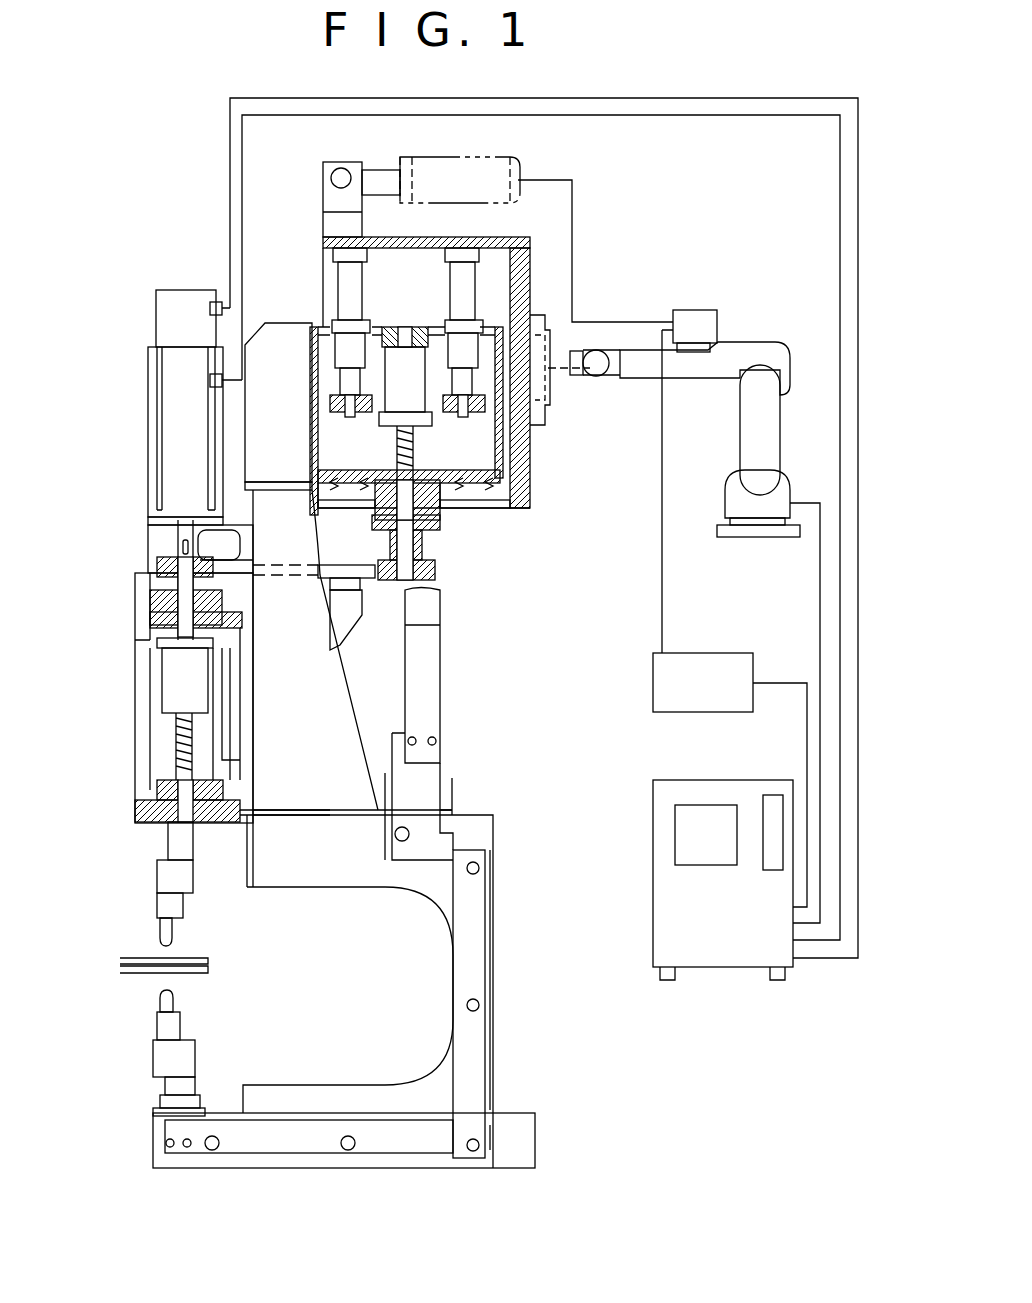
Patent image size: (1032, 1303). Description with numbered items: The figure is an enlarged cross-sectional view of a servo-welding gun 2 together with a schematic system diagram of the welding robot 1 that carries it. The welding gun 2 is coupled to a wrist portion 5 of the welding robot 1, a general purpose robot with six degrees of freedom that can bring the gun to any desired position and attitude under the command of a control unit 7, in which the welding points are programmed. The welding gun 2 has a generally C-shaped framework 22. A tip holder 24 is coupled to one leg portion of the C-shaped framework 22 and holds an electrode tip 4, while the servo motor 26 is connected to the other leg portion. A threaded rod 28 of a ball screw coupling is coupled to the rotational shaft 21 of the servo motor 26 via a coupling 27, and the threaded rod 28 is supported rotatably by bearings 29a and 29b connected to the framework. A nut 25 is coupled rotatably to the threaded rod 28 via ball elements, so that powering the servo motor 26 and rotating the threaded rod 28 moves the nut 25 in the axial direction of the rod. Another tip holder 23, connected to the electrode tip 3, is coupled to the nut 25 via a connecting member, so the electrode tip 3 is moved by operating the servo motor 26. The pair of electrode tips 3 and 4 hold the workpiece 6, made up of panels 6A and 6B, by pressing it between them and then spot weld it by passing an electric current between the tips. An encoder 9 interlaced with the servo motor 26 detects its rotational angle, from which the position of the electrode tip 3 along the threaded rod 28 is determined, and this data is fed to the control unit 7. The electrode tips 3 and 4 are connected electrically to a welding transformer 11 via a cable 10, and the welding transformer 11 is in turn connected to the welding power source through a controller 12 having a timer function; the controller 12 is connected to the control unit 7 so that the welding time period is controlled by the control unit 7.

The welding robot 1 is at (752, 338).
The servo-welding gun 2 is at (535, 1080).
The electrode tip 3 is at (160, 940).
The electrode tip 4 is at (160, 998).
The wrist portion 5 is at (578, 375).
The workpiece 6 is at (247, 989).
The panel 6A is at (212, 960).
The panel 6B is at (212, 970).
The control unit 7 is at (711, 970).
The encoder 9 is at (188, 290).
The cable 10 is at (520, 160).
The welding transformer 11 is at (680, 310).
The controller 12 is at (653, 683).
The rotational shaft 21 is at (182, 535).
The C-shaped framework 22 is at (473, 1030).
The tip holder 23 is at (165, 884).
The tip holder 24 is at (158, 1060).
The nut 25 is at (173, 680).
The servo motor 26 is at (153, 385).
The coupling 27 is at (165, 545).
The threaded rod 28 is at (178, 775).
The bearing 29a is at (160, 578).
The bearing 29b is at (160, 792).